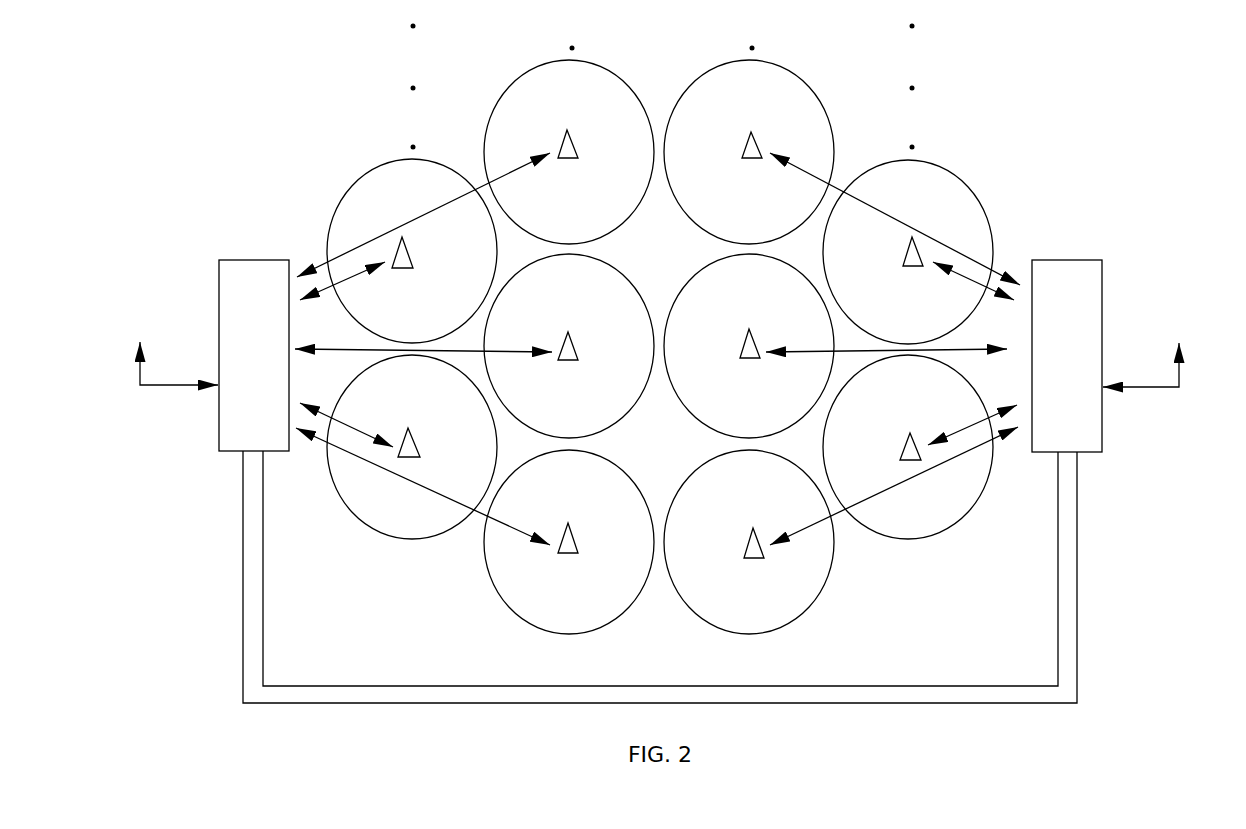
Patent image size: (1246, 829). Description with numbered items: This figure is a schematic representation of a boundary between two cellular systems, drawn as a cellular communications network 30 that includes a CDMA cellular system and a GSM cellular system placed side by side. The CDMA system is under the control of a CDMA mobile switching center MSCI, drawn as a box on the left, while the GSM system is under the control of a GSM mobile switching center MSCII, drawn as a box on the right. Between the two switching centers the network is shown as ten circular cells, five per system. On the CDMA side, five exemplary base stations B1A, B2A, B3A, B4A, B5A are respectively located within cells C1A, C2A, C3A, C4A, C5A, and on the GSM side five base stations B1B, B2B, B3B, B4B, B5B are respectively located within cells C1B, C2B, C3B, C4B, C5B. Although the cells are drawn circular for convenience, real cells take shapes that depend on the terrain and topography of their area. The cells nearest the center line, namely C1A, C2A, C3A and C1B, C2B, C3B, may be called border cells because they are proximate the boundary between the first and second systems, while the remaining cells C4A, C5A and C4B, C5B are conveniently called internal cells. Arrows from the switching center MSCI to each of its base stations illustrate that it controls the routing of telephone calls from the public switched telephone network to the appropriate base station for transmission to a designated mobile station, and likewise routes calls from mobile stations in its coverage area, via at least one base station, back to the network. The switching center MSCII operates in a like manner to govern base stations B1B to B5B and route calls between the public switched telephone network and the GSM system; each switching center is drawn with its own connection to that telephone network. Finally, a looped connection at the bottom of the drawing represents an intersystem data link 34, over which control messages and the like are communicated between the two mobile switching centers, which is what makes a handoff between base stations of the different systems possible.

The cellular communications network 30 is at (1083, 133).
The intersystem data link 34 is at (1077, 572).
The CDMA mobile switching center MSCI is at (254, 355).
The GSM mobile switching center MSCII is at (1067, 356).
The cell C1A is at (569, 152).
The cell C1B is at (749, 152).
The cell C2A is at (569, 346).
The cell C2B is at (749, 346).
The cell C3A is at (569, 542).
The cell C3B is at (749, 542).
The cell C4A is at (412, 447).
The cell C4B is at (908, 447).
The cell C5A is at (412, 251).
The cell C5B is at (908, 252).
The base station B1A is at (584, 150).
The base station B1B is at (736, 152).
The base station B2A is at (584, 353).
The base station B2B is at (734, 350).
The base station B3A is at (584, 548).
The base station B3B is at (738, 551).
The base station B4A is at (426, 452).
The base station B4B is at (894, 453).
The base station B5A is at (418, 258).
The base station B5B is at (897, 257).